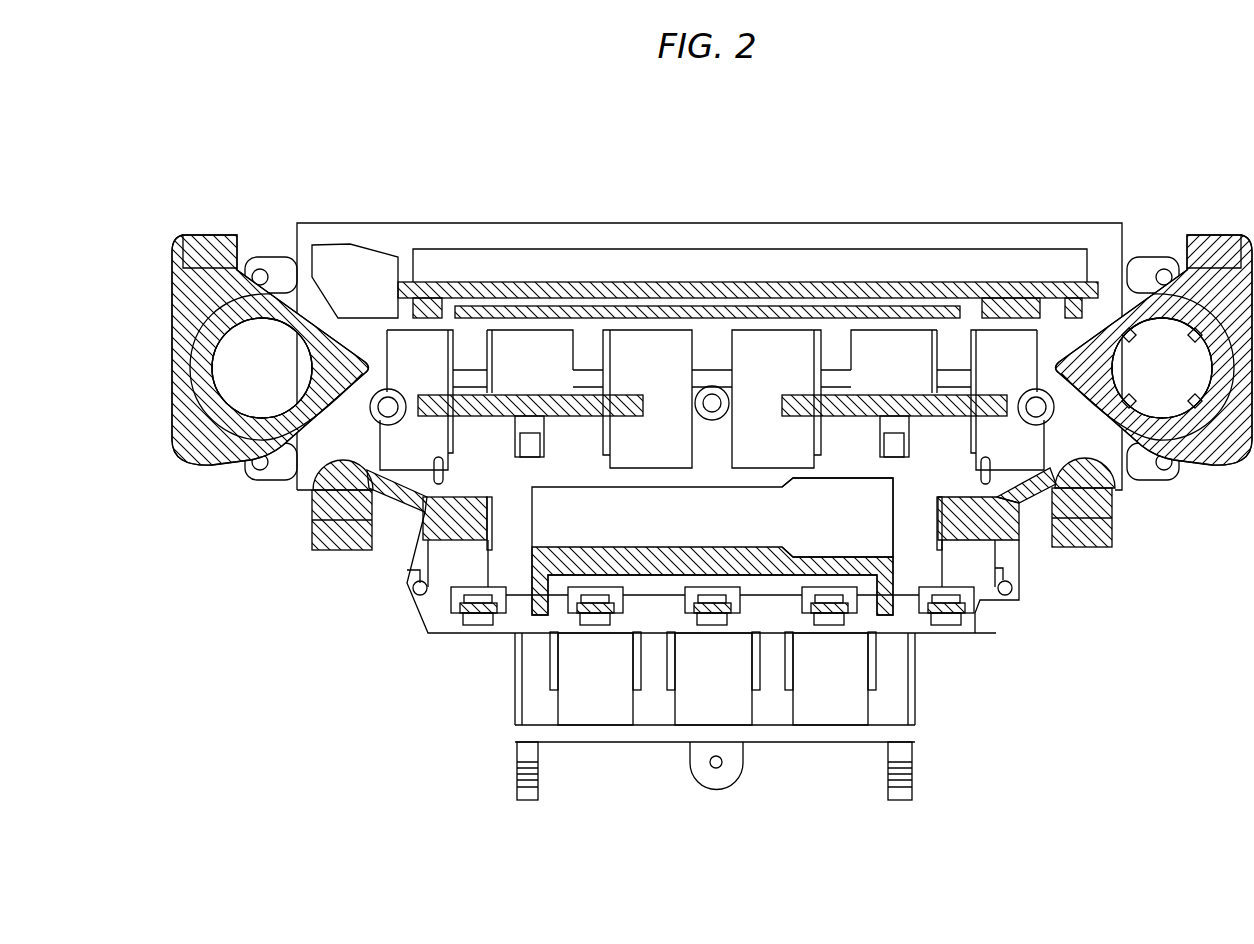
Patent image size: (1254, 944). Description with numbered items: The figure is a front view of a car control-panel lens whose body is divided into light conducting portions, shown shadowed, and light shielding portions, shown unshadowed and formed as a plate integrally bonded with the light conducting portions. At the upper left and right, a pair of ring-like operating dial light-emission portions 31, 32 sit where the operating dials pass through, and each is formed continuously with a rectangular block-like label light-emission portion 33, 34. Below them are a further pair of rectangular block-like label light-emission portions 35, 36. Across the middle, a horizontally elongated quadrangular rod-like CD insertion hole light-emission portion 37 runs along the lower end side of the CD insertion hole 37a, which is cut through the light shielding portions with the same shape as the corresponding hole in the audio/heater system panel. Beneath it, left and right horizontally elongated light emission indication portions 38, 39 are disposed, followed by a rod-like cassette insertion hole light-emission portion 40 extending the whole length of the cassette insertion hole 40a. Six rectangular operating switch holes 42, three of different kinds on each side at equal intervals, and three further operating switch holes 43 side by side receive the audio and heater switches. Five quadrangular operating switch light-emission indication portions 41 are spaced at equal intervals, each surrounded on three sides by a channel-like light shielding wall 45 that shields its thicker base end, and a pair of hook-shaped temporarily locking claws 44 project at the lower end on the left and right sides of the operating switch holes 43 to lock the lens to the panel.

The operating dial light-emission portion 31 is at (1190, 452).
The operating dial light-emission portion 32 is at (225, 420).
The label light-emission portion 33 is at (1205, 237).
The label light-emission portion 34 is at (203, 238).
The label light-emission portion 35 is at (1113, 541).
The label light-emission portion 36 is at (315, 541).
The CD insertion hole light-emission portion 37 is at (677, 297).
The CD insertion hole 37a is at (890, 250).
The light emission indication portion 38 is at (527, 396).
The light emission indication portion 39 is at (907, 394).
The cassette insertion hole light-emission portion 40 is at (563, 567).
The cassette insertion hole 40a is at (867, 553).
The operating switch light-emission indication portion 41 is at (477, 614).
The operating switch hole 42 is at (433, 330).
The operating switch hole 43 is at (592, 720).
The temporarily locking claw 44 is at (520, 790).
The light shielding wall 45 is at (453, 597).